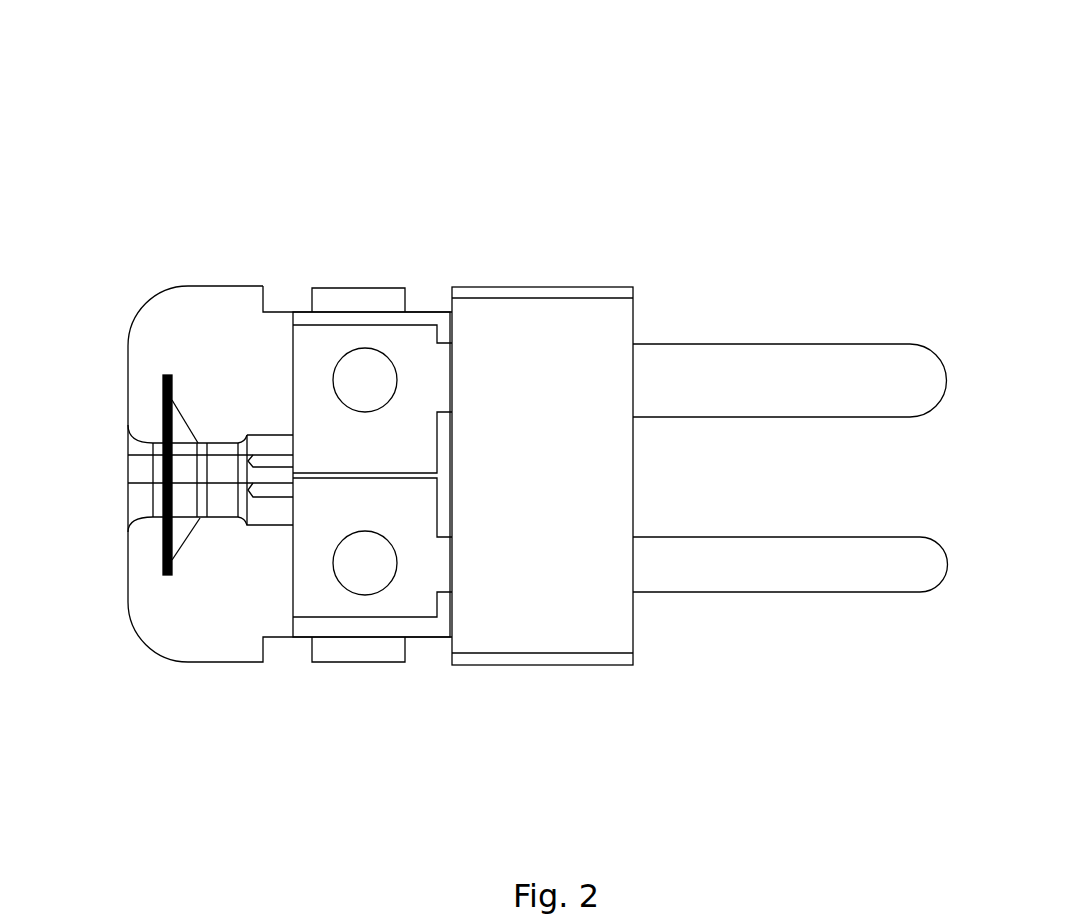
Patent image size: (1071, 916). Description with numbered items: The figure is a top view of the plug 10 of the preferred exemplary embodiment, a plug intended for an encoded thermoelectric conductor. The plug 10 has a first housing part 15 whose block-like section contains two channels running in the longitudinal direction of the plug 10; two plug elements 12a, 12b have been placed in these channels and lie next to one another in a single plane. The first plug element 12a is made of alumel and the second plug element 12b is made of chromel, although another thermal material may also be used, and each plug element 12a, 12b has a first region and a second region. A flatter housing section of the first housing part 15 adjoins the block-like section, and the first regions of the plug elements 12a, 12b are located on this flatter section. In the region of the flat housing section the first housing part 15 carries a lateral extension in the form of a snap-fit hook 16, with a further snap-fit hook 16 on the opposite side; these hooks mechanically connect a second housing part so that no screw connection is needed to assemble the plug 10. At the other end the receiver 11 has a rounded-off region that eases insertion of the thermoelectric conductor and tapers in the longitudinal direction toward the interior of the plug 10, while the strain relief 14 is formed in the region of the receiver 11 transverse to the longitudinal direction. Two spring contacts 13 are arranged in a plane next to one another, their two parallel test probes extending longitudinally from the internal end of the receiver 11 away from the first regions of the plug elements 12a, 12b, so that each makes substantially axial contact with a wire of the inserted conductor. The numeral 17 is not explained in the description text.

The plug 10 is at (532, 153).
The receiver 11 is at (142, 468).
The first plug element 12a is at (813, 370).
The second plug element 12b is at (790, 573).
The spring contacts 13 is at (268, 445).
The strain relief 14 is at (167, 413).
The first housing part 15 is at (572, 372).
The snap-fit hook 16 is at (343, 300).
The fastening hole 17 is at (365, 370).